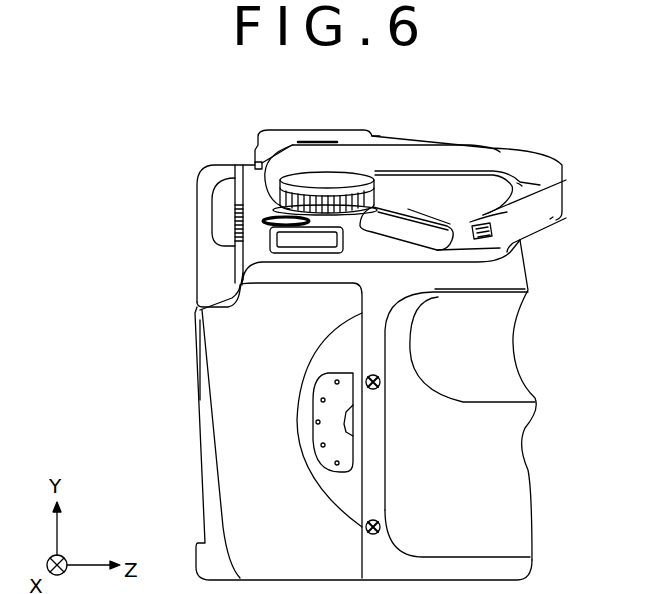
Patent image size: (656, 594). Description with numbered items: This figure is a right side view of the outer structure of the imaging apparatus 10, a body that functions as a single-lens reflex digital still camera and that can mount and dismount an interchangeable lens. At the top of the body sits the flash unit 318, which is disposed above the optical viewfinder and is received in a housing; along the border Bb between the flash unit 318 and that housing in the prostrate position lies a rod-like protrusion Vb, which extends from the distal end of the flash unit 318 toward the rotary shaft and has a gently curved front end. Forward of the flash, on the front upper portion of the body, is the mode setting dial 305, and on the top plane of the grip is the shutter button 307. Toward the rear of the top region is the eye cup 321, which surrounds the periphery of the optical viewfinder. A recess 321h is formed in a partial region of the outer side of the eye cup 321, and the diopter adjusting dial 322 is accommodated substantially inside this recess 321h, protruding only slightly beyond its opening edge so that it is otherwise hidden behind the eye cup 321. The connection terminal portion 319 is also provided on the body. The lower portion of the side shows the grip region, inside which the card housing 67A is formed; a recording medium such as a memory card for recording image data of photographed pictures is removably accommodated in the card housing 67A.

The imaging apparatus 10 is at (188, 152).
The connection terminal portion 319 is at (290, 124).
The mode setting dial 305 is at (377, 180).
The shutter button 307 is at (442, 215).
The flash unit 318 is at (530, 163).
The recess 321h is at (212, 198).
The diopter adjusting dial 322 is at (240, 227).
The eye cup 321 is at (213, 281).
The card housing 67A is at (243, 419).
The protrusion Vb is at (517, 183).
The border Bb is at (553, 217).